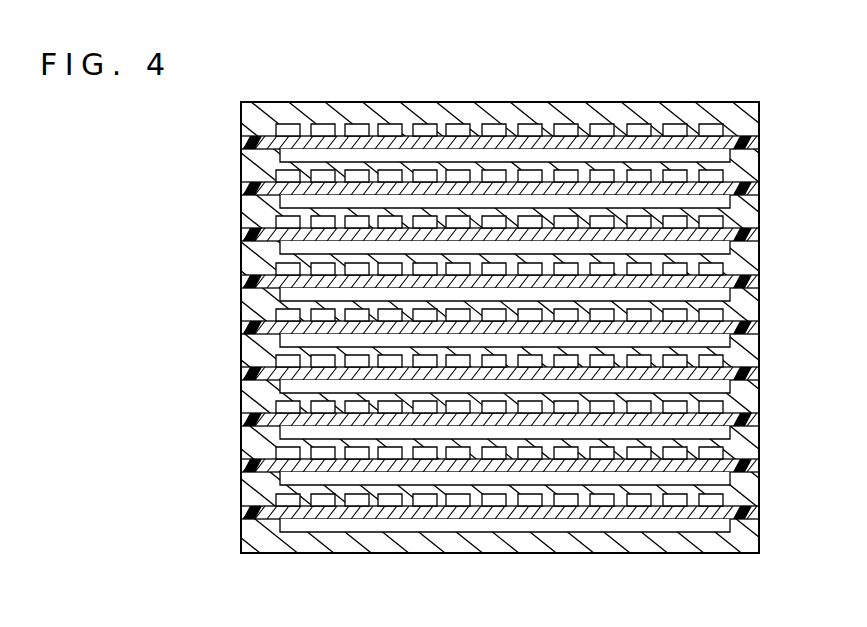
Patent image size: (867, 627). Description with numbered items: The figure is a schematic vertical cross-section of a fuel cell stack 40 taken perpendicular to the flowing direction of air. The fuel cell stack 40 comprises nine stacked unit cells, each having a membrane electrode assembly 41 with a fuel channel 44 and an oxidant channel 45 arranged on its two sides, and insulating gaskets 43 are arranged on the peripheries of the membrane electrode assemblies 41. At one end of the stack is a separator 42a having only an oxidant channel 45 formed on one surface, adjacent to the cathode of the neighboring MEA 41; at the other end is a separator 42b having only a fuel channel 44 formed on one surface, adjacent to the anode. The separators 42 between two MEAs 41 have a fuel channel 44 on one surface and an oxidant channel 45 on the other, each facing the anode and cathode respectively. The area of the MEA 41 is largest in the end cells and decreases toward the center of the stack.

The fuel cell stack 40 is at (690, 78).
The membrane electrode assembly 41 is at (722, 143).
The separator 42 is at (740, 213).
The separator 42a is at (570, 113).
The separator 42b is at (557, 540).
The insulating gasket 43 is at (760, 277).
The fuel channel 44 is at (452, 157).
The oxidant channel 45 is at (640, 127).